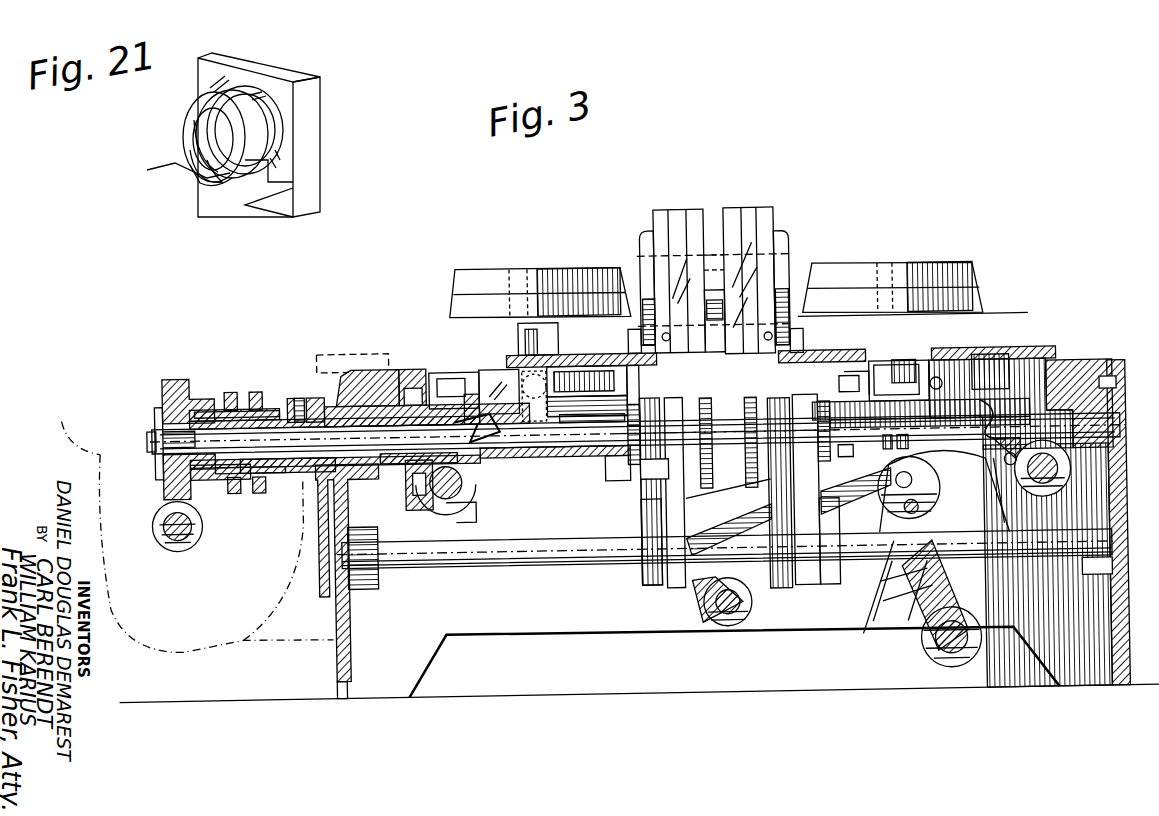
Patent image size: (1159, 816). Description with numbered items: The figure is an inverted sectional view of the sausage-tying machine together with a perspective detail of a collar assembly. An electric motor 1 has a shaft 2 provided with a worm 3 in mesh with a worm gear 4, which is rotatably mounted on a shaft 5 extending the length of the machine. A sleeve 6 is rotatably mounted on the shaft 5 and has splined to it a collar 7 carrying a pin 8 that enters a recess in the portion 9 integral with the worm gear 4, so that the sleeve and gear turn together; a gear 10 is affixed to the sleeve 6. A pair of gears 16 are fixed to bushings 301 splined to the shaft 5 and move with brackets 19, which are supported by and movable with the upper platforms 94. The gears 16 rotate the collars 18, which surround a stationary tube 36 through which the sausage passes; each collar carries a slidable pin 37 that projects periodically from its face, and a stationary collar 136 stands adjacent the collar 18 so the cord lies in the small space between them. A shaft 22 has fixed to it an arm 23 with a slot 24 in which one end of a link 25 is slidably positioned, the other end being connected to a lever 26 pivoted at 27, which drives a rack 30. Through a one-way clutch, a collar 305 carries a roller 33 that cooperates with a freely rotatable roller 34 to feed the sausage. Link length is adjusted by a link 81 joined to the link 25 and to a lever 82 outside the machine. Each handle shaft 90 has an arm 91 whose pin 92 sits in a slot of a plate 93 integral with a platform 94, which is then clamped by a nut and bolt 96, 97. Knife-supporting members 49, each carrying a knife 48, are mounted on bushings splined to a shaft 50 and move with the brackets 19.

In FIG. 3, the electric motor 1 is at (192, 525).
In FIG. 3, the shaft 2 is at (163, 512).
In FIG. 3, the worm 3 is at (200, 522).
In FIG. 3, the worm gear 4 is at (178, 374).
In FIG. 3, the shaft 5 is at (255, 436).
In FIG. 3, the sleeve 6 is at (292, 393).
In FIG. 3, the collar 7 is at (225, 403).
In FIG. 3, the pin 8 is at (240, 386).
In FIG. 3, the portion 9 is at (205, 401).
In FIG. 3, the gear 10 is at (414, 366).
In FIG. 3, the gears 16 is at (712, 517).
In FIG. 21, the collars 18 is at (255, 92).
In FIG. 3, the collars 18 is at (652, 240).
In FIG. 3, the brackets 19 is at (678, 589).
In FIG. 3, the shaft 22 is at (928, 655).
In FIG. 3, the arm 23 is at (905, 572).
In FIG. 3, the slot 24 is at (900, 630).
In FIG. 3, the link 25 is at (836, 496).
In FIG. 3, the lever 26 is at (705, 612).
In FIG. 3, the pivot 27 is at (722, 616).
In FIG. 3, the rack 30 is at (585, 456).
In FIG. 3, the bushings 301 is at (625, 485).
In FIG. 3, the collar 305 is at (558, 368).
In FIG. 3, the roller 33 is at (460, 288).
In FIG. 3, the roller 34 is at (985, 305).
In FIG. 3, the stationary tube 36 is at (718, 262).
In FIG. 21, the pin 37 is at (190, 156).
In FIG. 3, the knife 48 is at (635, 330).
In FIG. 3, the knife-supporting members 49 is at (640, 520).
In FIG. 3, the shaft 50 is at (605, 565).
In FIG. 3, the link 81 is at (938, 524).
In FIG. 3, the lever 82 is at (920, 595).
In FIG. 3, the shaft 90 is at (462, 484).
In FIG. 3, the arm 91 is at (470, 481).
In FIG. 3, the pin 92 is at (470, 418).
In FIG. 3, the plate 93 is at (618, 348).
In FIG. 3, the upper platforms 94 is at (1050, 353).
In FIG. 3, the nut 96 is at (500, 382).
In FIG. 3, the bolt 97 is at (535, 370).
In FIG. 21, the stationary collar 136 is at (183, 126).